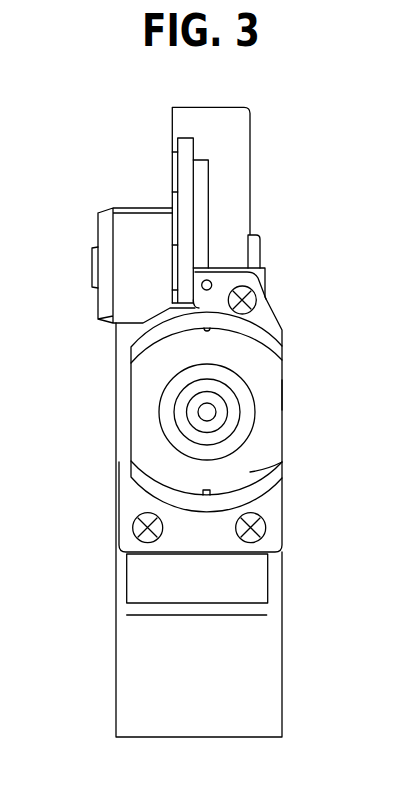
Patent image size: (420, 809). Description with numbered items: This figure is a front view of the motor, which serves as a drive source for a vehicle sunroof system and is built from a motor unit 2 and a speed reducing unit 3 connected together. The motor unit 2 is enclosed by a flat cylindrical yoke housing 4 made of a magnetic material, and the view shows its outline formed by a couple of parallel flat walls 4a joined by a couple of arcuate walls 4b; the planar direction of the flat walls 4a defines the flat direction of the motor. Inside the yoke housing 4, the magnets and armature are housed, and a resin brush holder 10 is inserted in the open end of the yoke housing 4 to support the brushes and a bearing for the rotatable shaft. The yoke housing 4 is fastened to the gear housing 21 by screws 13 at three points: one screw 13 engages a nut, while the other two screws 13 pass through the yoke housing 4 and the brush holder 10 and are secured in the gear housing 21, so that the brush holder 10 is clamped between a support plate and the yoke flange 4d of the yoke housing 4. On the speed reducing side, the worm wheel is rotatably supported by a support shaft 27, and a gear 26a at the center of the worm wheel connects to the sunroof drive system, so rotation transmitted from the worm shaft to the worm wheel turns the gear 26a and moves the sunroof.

The motor unit 2 is at (141, 429).
The speed reducing unit 3 is at (253, 128).
The yoke housing 4 is at (282, 335).
The flat walls 4a is at (282, 393).
The arcuate walls 4b is at (183, 498).
The yoke flange 4d is at (273, 500).
The brush holder 10 is at (133, 578).
The screws 13 is at (257, 301).
The gear housing 21 is at (278, 663).
The gear 26a is at (110, 212).
The support shaft 27 is at (91, 266).